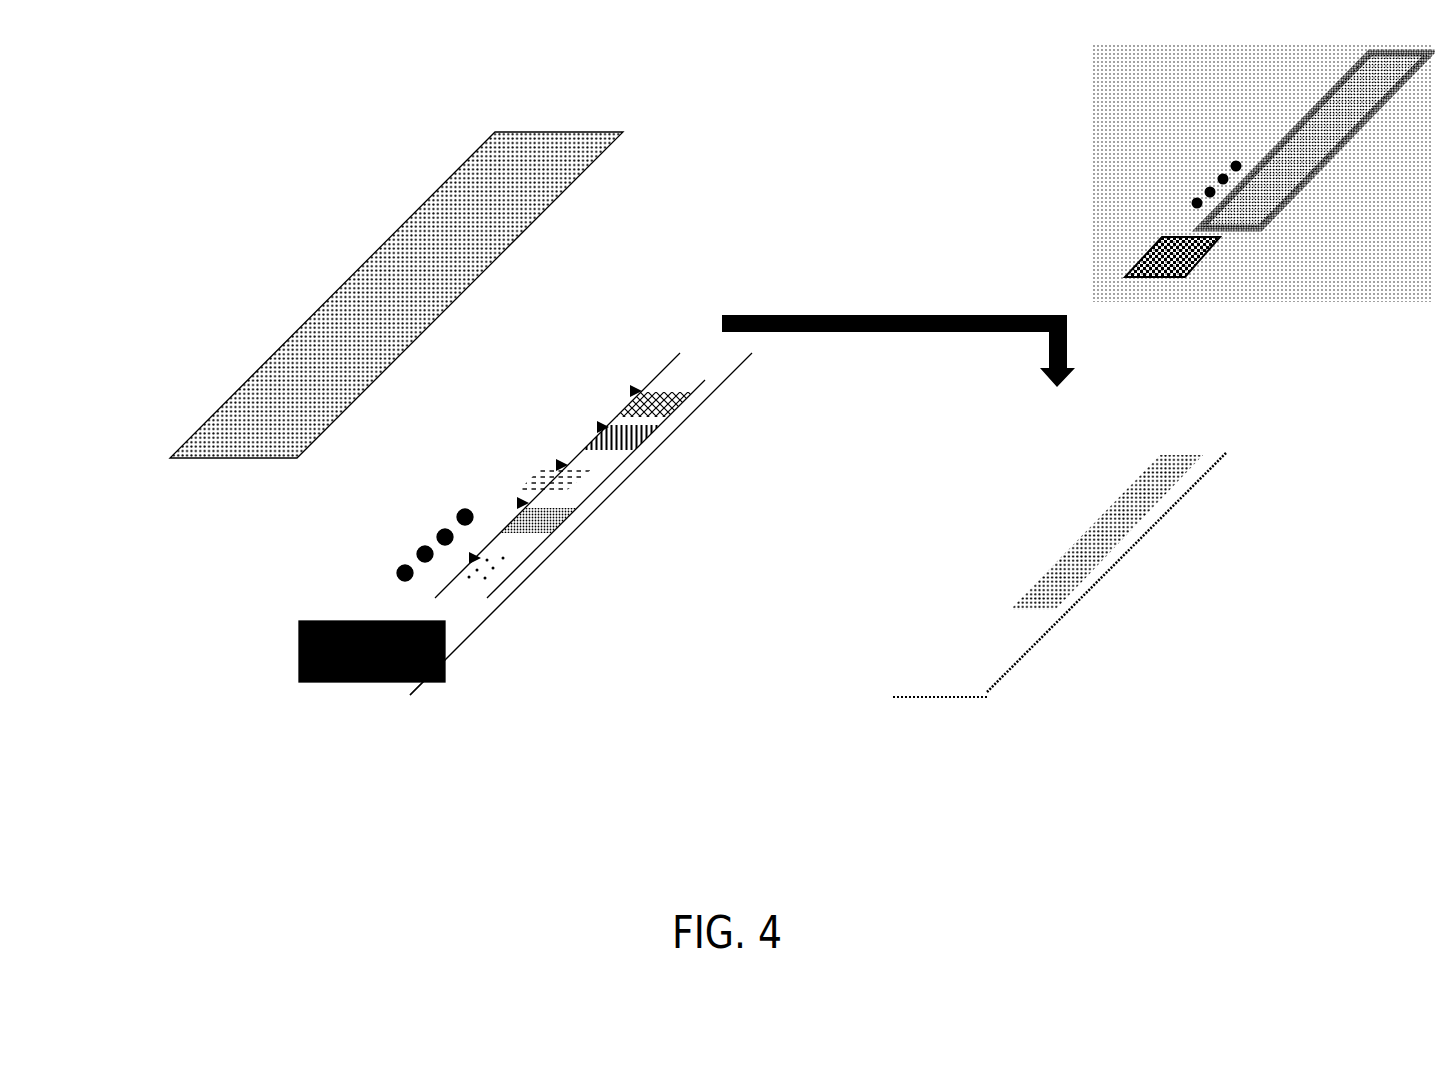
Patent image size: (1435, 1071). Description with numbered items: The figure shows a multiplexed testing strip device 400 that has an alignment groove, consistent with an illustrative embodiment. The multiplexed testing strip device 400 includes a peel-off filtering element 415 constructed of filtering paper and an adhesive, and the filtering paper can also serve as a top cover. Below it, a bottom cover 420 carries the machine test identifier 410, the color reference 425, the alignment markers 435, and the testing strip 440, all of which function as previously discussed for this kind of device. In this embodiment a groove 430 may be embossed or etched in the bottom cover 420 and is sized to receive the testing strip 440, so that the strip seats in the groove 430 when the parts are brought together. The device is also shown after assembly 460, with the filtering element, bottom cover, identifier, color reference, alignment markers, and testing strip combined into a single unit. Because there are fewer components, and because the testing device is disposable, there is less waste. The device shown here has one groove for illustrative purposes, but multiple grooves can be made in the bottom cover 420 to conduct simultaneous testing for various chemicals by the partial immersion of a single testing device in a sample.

The multiplexed testing strip device 400 is at (664, 417).
The machine test identifier 410 is at (299, 625).
The peel-off filtering element 415 is at (393, 235).
The bottom cover 420 is at (387, 697).
The color reference 425 is at (415, 545).
The groove 430 is at (460, 585).
The alignment markers 435 is at (607, 425).
The testing strip 440 is at (633, 450).
The assembly 460 is at (1237, 133).